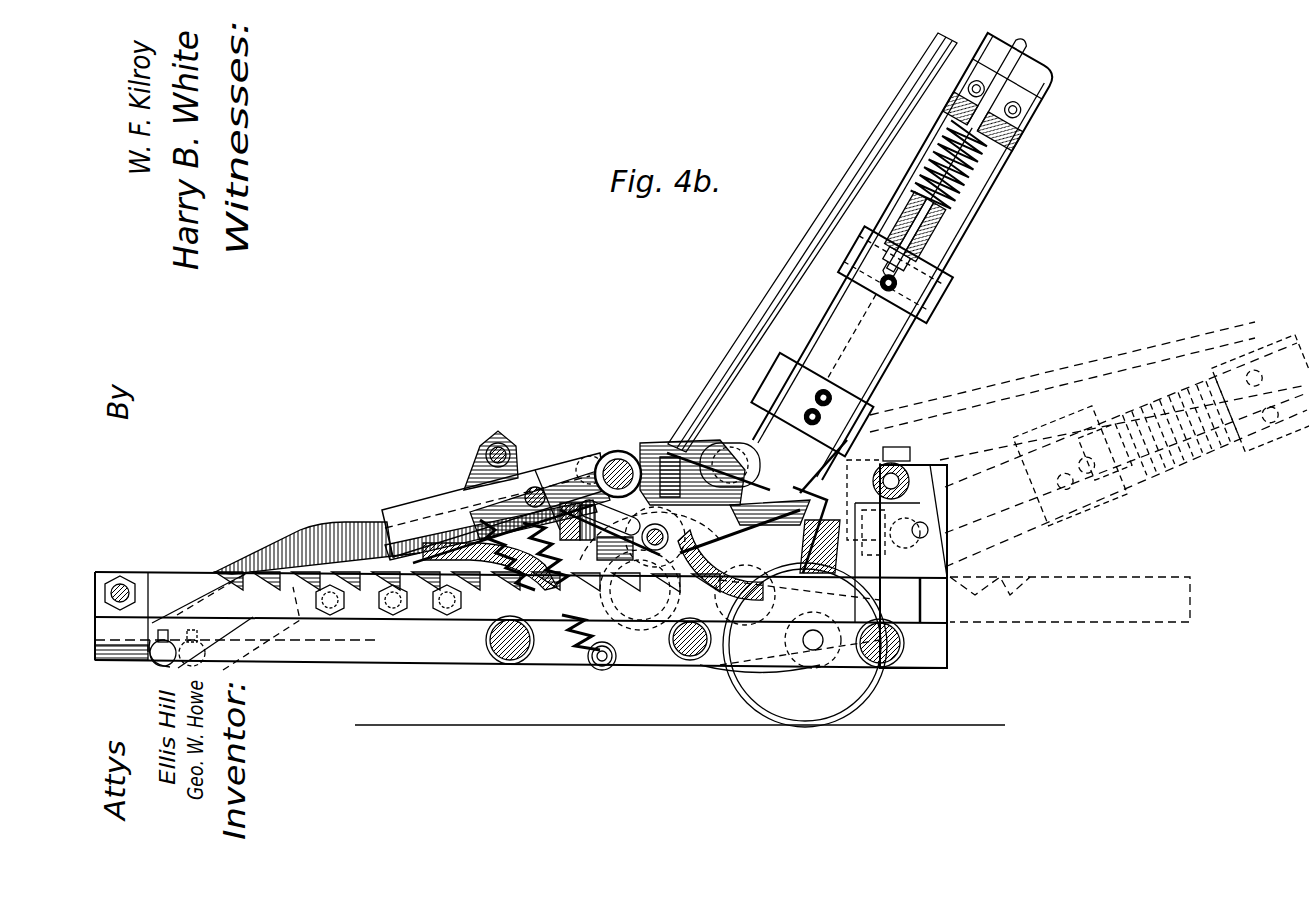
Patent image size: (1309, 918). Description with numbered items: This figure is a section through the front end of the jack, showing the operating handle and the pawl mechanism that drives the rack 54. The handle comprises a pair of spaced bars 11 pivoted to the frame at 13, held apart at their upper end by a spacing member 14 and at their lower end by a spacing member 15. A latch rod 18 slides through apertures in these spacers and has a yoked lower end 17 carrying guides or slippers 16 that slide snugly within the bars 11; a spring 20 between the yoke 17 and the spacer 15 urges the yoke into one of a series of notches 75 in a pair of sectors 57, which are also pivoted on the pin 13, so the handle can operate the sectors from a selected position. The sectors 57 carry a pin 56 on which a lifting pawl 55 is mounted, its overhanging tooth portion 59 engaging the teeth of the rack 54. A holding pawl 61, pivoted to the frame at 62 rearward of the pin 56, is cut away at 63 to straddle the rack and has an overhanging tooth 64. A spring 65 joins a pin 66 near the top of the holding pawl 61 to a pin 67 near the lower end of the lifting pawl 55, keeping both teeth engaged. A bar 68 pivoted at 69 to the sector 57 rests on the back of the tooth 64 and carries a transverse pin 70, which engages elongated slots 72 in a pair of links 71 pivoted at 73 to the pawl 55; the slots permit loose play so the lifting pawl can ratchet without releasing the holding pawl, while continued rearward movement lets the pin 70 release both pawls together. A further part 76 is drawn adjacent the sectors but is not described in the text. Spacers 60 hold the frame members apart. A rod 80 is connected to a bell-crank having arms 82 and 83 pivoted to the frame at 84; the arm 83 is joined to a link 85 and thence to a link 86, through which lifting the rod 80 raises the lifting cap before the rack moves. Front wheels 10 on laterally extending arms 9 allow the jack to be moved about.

The arm 9 is at (800, 652).
The front wheel 10 is at (805, 661).
The spaced bar 11 is at (985, 182).
The pivot 13 is at (581, 700).
The spacing member 14 is at (535, 560).
The spacing member 15 is at (940, 272).
The guide or slipper 16 is at (862, 244).
The yoked lower end 17 is at (932, 240).
The latch rod 18 is at (1027, 52).
The spring 20 is at (973, 133).
The rack 54 is at (1027, 577).
The pawl 55 is at (675, 650).
The pin 56 is at (510, 662).
The sector 57 is at (840, 462).
The overhanging tooth portion 59 is at (757, 650).
The spacer 60 is at (513, 625).
The holding pawl 61 is at (470, 480).
The pivot 62 is at (462, 590).
The channel or central cut-away 63 is at (508, 568).
The overhanging tooth 64 is at (500, 575).
The spring 65 is at (585, 636).
The pin 66 is at (500, 446).
The pin 67 is at (600, 664).
The bar 68 is at (393, 508).
The pivot end 69 is at (624, 458).
The pin 70 is at (541, 488).
The link 71 is at (582, 480).
The elongated slot 72 is at (586, 478).
The pivot 73 is at (655, 528).
The notch 75 is at (874, 398).
The block 76 is at (887, 430).
The rod 80 is at (820, 232).
The bell-crank arm 82 is at (885, 666).
The bell-crank arm 83 is at (1124, 446).
The pivot 84 is at (945, 622).
The link 85 is at (295, 530).
The link 86 is at (126, 662).